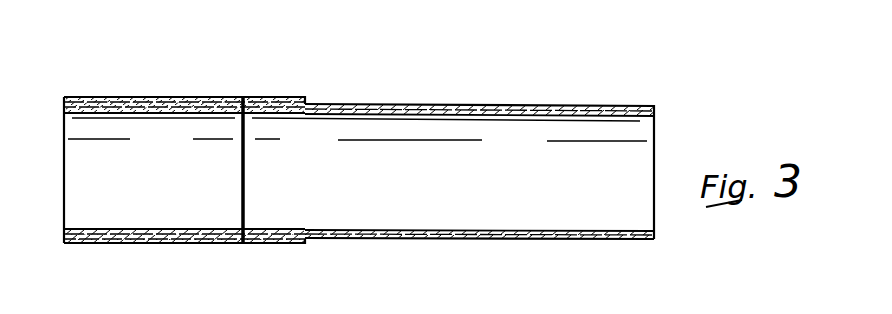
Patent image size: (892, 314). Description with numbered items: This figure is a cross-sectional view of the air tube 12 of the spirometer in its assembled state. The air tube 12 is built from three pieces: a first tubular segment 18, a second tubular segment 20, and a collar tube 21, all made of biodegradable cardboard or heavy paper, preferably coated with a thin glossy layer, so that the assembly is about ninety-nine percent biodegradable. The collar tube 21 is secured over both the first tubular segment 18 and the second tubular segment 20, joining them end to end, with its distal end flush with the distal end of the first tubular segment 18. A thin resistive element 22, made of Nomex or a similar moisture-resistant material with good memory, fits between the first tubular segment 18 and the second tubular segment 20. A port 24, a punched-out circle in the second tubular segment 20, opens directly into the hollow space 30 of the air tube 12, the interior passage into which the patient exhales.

The air tube 12 is at (50, 112).
The first tubular segment 18 is at (155, 116).
The second tubular segment 20 is at (528, 106).
The collar tube 21 is at (197, 97).
The resistive element 22 is at (244, 172).
The port 24 is at (365, 239).
The hollow space 30 is at (525, 155).